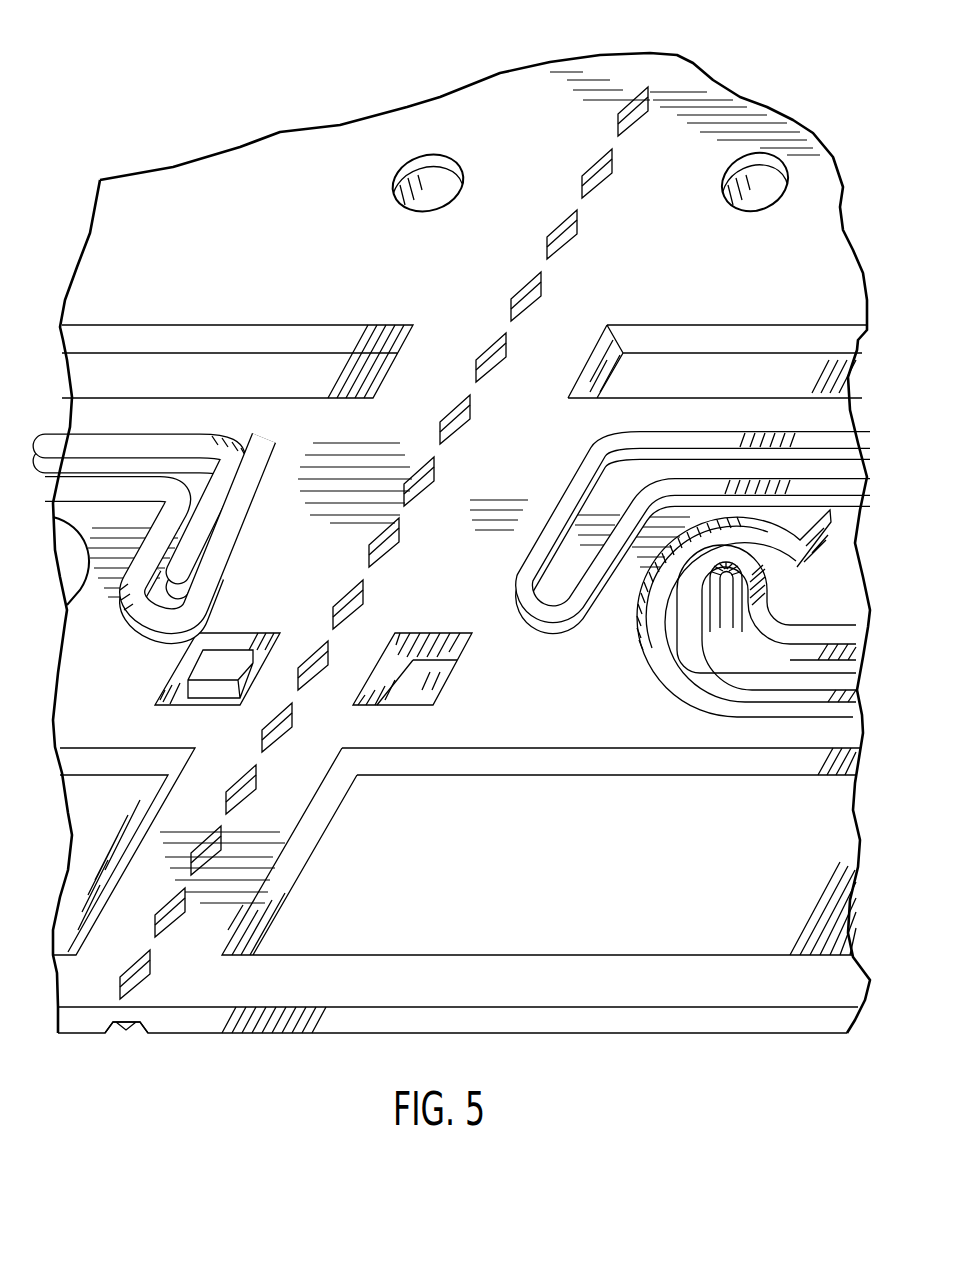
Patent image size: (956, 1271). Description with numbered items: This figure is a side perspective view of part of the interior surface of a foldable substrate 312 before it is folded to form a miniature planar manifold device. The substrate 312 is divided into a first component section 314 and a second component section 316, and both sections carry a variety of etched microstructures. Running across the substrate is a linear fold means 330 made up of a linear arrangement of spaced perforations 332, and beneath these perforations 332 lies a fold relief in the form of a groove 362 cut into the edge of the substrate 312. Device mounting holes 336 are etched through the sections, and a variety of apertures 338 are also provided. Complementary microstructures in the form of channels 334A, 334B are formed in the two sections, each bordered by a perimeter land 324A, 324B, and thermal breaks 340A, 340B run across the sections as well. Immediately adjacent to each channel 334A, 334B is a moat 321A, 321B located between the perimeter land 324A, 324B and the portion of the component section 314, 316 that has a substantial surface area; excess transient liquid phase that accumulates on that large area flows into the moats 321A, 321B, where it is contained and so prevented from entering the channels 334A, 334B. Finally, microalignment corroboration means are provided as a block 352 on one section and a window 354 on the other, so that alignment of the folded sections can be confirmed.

The foldable substrate 312 is at (678, 1030).
The first component section 314 is at (283, 228).
The second component section 316 is at (767, 284).
The moat 321A is at (140, 603).
The moat 321B is at (511, 568).
The perimeter land 324A is at (162, 467).
The perimeter land 324B is at (645, 480).
The linear fold means 330 is at (641, 72).
The spaced perforations 332 is at (540, 293).
The channel 334A is at (248, 465).
The channel 334B is at (703, 453).
The device mounting holes 336 is at (448, 167).
The apertures 338 is at (735, 592).
The thermal break 340A is at (230, 393).
The thermal break 340B is at (742, 393).
The block 352 is at (230, 652).
The window 354 is at (427, 667).
The groove 362 is at (137, 1025).